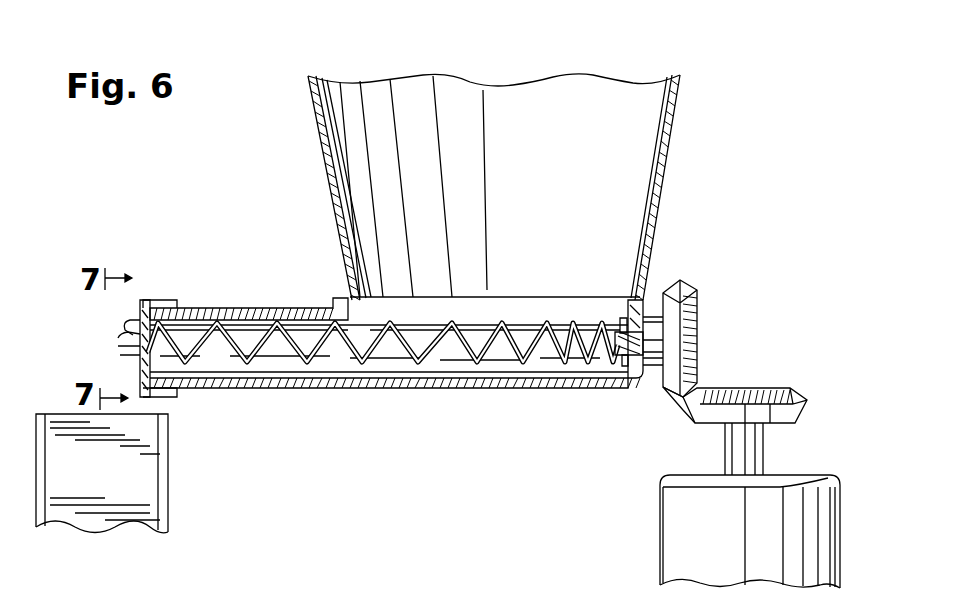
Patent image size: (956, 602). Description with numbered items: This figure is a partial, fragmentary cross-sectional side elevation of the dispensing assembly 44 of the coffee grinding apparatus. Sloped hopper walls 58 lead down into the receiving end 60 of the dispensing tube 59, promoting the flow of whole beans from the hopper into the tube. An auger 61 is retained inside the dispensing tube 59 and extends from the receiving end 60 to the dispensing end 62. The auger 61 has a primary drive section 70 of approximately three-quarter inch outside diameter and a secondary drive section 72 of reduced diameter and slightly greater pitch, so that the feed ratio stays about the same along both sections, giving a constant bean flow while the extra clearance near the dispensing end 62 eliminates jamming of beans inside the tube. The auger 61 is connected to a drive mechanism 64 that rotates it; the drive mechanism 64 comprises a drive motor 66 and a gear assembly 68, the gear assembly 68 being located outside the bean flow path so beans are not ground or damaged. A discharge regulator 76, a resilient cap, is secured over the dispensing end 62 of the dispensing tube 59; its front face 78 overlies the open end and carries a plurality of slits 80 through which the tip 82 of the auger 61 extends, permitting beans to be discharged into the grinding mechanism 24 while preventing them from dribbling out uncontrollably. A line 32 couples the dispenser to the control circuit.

The grinding mechanism 24 is at (170, 485).
The line 32 is at (610, 598).
The dispensing assembly 44 is at (200, 172).
The sloped hopper walls 58 is at (335, 148).
The dispensing tube 59 is at (276, 312).
The receiving end 60 is at (598, 298).
The auger 61 is at (313, 330).
The dispensing end 62 is at (240, 308).
The drive mechanism 64 is at (767, 273).
The drive motor 66 is at (828, 476).
The gear assembly 68 is at (710, 373).
The primary drive section 70 is at (572, 355).
The secondary drive section 72 is at (287, 350).
The discharge regulator 76 is at (167, 300).
The front face 78 is at (140, 322).
The slits 80 is at (135, 338).
The tip 82 is at (130, 350).